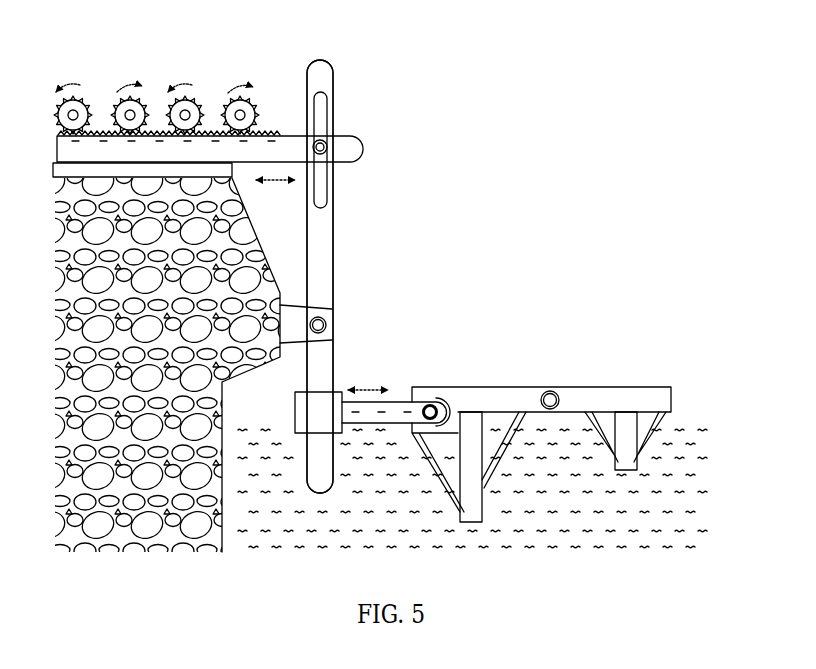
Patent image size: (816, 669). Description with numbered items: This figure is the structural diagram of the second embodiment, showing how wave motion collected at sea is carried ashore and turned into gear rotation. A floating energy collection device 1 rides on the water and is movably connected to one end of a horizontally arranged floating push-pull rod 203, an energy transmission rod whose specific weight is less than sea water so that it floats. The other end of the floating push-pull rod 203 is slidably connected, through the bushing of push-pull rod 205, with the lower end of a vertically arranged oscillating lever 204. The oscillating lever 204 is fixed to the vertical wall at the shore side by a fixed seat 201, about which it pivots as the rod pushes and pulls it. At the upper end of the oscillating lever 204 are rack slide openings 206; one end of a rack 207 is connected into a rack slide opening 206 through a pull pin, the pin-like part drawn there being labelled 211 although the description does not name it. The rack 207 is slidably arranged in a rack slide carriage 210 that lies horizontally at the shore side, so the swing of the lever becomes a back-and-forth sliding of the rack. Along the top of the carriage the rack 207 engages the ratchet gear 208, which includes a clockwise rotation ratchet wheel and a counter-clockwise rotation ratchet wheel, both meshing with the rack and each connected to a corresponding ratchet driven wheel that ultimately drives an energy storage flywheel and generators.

The floating energy collection device 1 is at (610, 397).
The fixed seat 201 is at (330, 313).
The floating push-pull rod 203 is at (395, 396).
The oscillating lever 204 is at (322, 272).
The bushing of push-pull rod 205 is at (318, 398).
The rack slide opening 206 is at (322, 187).
The rack 207 is at (270, 152).
The ratchet gear 208 is at (190, 105).
The rack slide carriage 210 is at (220, 168).
The slide pin 211 is at (322, 145).